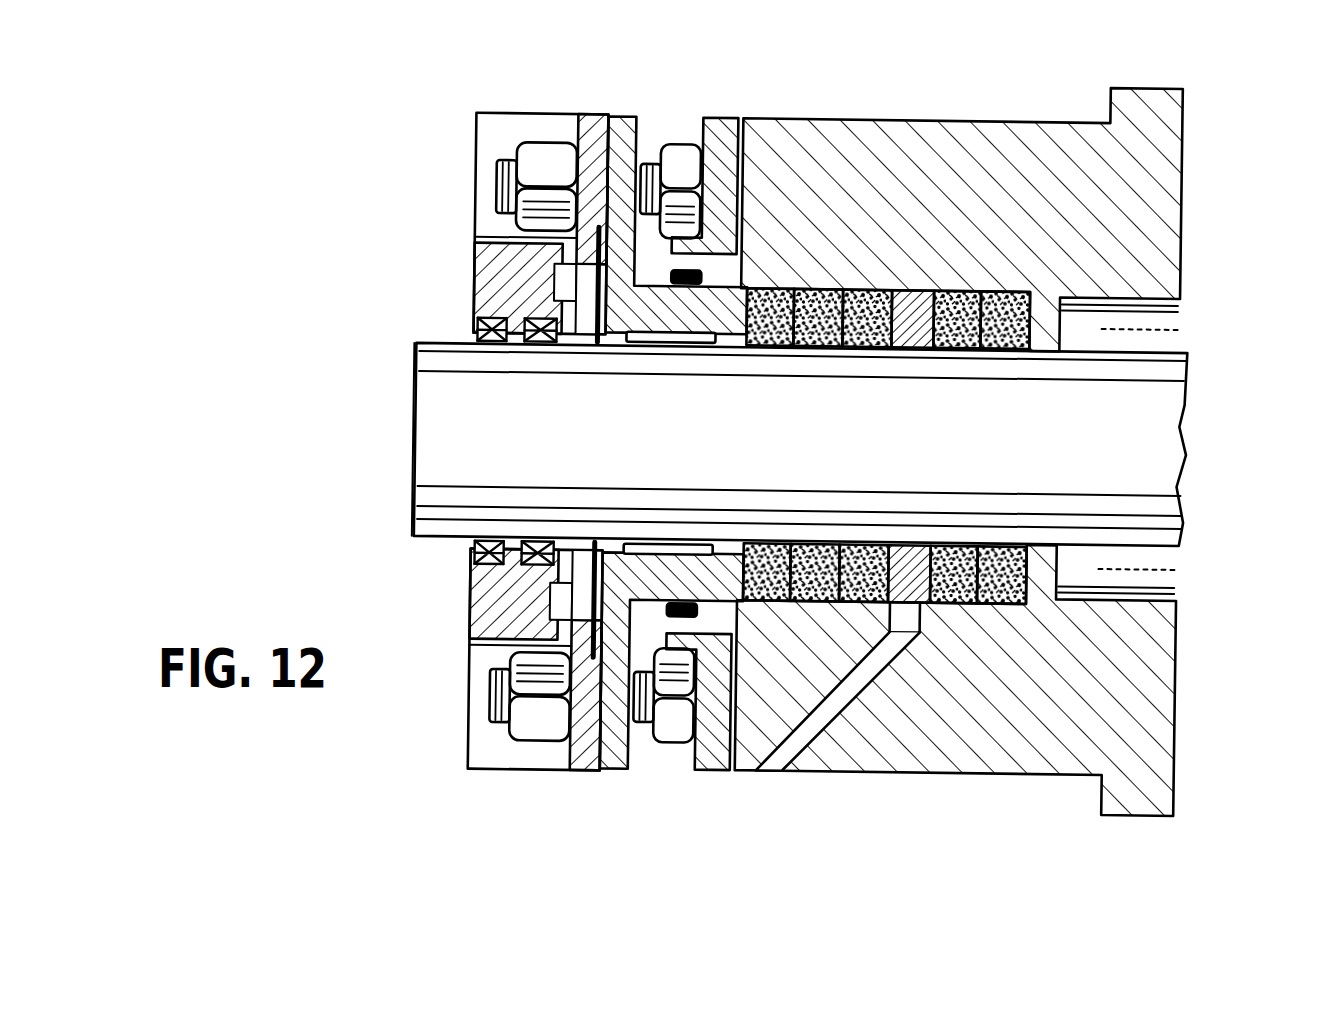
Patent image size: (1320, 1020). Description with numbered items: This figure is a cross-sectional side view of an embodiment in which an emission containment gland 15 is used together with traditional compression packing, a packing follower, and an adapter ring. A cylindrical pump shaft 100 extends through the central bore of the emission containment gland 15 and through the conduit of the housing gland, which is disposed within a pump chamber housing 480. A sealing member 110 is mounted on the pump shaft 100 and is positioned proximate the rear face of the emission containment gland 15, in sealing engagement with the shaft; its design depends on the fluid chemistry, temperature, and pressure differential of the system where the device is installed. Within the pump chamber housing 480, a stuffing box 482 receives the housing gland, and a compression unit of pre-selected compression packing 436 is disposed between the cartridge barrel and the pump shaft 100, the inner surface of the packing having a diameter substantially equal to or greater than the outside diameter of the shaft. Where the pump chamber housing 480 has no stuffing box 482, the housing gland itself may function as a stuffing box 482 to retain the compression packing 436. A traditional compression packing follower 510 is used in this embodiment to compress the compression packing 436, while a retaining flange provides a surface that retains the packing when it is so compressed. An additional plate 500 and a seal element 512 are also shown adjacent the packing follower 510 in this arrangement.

The emission containment gland 15 is at (486, 280).
The pump shaft 100 is at (1048, 436).
The sealing member 110 is at (519, 344).
The compression packing 436 is at (811, 300).
The pump chamber housing 480 is at (1120, 194).
The stuffing box 482 is at (979, 615).
The plate 500 is at (718, 119).
The compression packing follower 510 is at (616, 120).
The O-ring seal 512 is at (686, 285).